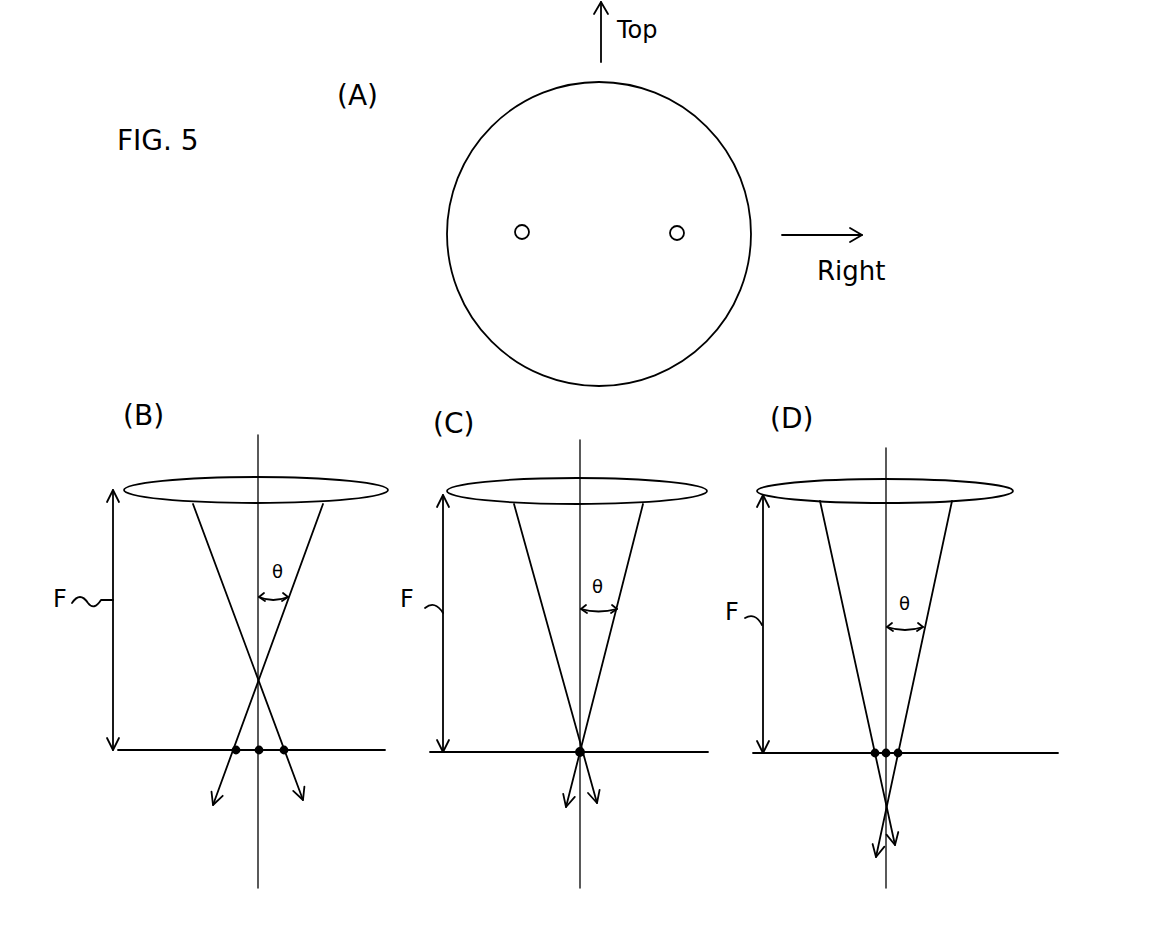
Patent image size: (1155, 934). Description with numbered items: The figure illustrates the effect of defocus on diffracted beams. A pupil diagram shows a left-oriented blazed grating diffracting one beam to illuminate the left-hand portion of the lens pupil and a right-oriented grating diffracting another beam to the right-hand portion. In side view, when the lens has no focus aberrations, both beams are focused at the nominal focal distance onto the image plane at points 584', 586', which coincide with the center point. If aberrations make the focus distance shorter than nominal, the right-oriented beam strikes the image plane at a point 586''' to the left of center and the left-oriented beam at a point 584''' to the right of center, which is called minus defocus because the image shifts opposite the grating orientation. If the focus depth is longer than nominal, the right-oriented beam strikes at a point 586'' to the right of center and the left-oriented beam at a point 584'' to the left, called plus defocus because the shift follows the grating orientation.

The point 584' is at (522, 712).
The point 586' is at (643, 716).
The point 584'' is at (835, 787).
The point 586'' is at (959, 779).
The point 584''' is at (342, 713).
The point 586''' is at (194, 713).